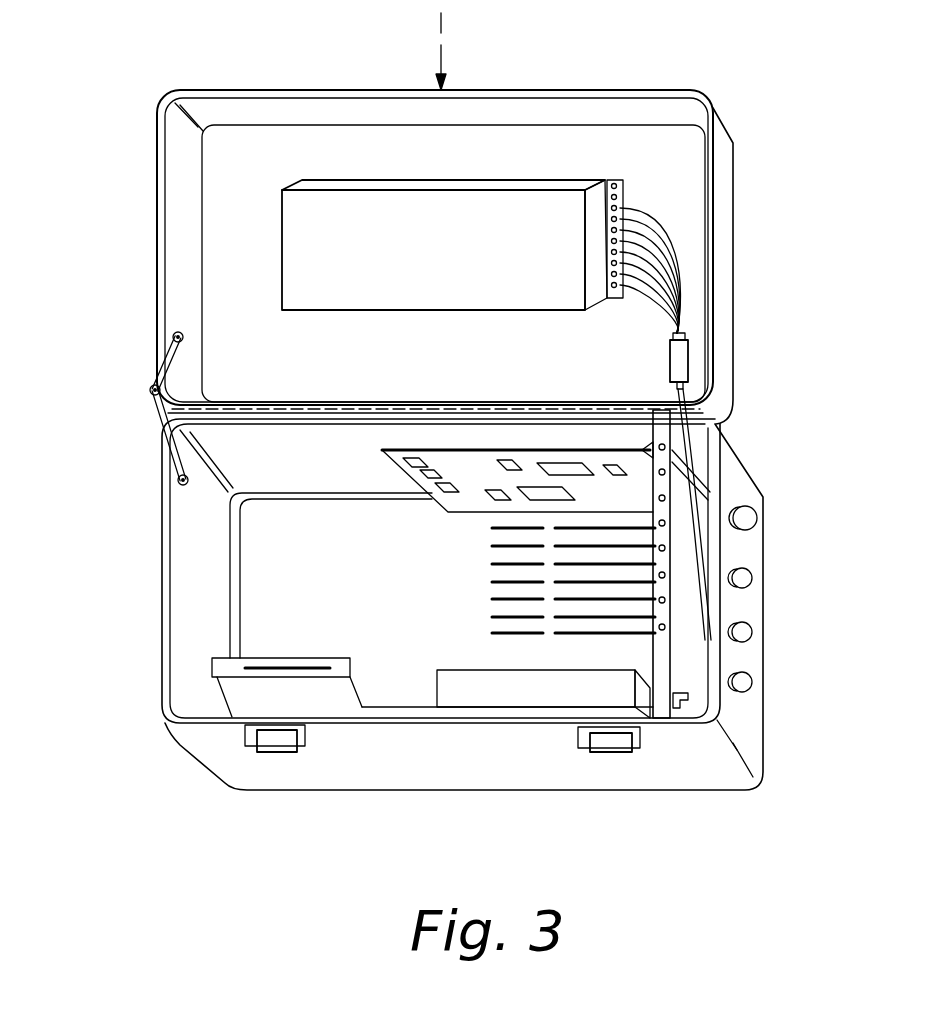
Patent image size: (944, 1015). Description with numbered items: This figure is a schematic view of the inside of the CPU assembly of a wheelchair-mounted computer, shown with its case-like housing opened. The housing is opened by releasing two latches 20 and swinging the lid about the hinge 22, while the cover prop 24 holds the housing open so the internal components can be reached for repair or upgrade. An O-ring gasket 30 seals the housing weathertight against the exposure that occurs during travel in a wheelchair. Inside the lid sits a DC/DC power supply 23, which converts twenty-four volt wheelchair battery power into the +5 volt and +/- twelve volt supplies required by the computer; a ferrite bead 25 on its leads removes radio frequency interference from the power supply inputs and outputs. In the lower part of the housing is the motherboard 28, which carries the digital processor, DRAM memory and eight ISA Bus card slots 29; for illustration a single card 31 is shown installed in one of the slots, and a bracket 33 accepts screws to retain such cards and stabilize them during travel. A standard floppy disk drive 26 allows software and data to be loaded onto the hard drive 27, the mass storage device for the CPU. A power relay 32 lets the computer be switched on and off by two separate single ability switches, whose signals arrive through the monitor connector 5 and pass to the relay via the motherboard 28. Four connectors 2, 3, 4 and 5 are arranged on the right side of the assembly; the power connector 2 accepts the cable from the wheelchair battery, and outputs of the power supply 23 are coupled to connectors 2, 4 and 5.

The O-ring gasket 30 is at (157, 212).
The hinge 22 is at (243, 409).
The cover prop 24 is at (150, 383).
The DC/DC power supply 23 is at (462, 246).
The ferrite bead 25 is at (670, 364).
The ISA Bus card 31 is at (502, 462).
The motherboard 28 is at (350, 568).
The ISA Bus card slots 29 is at (488, 518).
The floppy disk drive 26 is at (318, 698).
The hard drive 27 is at (485, 688).
The latches 20 is at (283, 753).
The bracket 33 is at (662, 667).
The power relay 32 is at (692, 708).
The monitor connector 5 is at (757, 518).
The connector 4 is at (752, 578).
The connector 3 is at (752, 632).
The power connector 2 is at (752, 682).